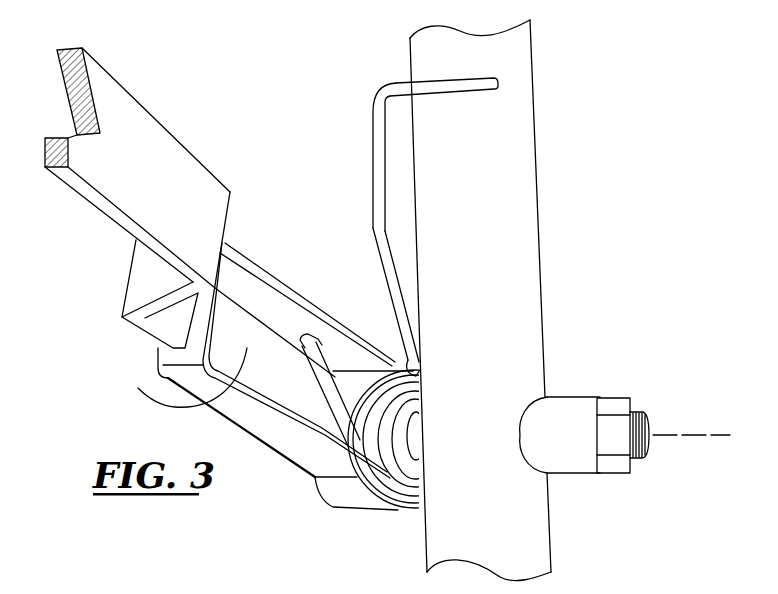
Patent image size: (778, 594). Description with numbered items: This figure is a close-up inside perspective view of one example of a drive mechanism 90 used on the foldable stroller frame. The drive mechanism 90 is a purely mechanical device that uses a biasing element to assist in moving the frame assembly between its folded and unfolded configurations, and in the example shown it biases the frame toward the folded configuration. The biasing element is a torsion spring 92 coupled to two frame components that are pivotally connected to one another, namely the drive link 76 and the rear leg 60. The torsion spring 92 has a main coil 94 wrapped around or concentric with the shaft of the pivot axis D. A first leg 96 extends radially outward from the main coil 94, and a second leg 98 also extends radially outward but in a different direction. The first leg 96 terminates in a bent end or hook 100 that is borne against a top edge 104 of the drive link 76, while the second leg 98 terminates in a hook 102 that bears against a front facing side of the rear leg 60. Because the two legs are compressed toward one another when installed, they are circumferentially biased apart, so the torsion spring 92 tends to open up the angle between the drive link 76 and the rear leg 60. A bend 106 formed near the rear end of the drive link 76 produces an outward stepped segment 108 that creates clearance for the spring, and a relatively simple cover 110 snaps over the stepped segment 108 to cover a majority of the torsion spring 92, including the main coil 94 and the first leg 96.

The rear leg 60 is at (503, 202).
The drive link 76 is at (123, 110).
The drive mechanism 90 is at (279, 486).
The torsion spring 92 is at (395, 395).
The main coil 94 is at (372, 427).
The first leg 96 is at (317, 373).
The second leg 98 is at (384, 166).
The hook 100 is at (303, 334).
The hook 102 is at (455, 88).
The top edge 104 is at (273, 323).
The bend 106 is at (150, 280).
The stepped segment 108 is at (170, 320).
The cover 110 is at (268, 293).
The pivot axis D is at (670, 430).